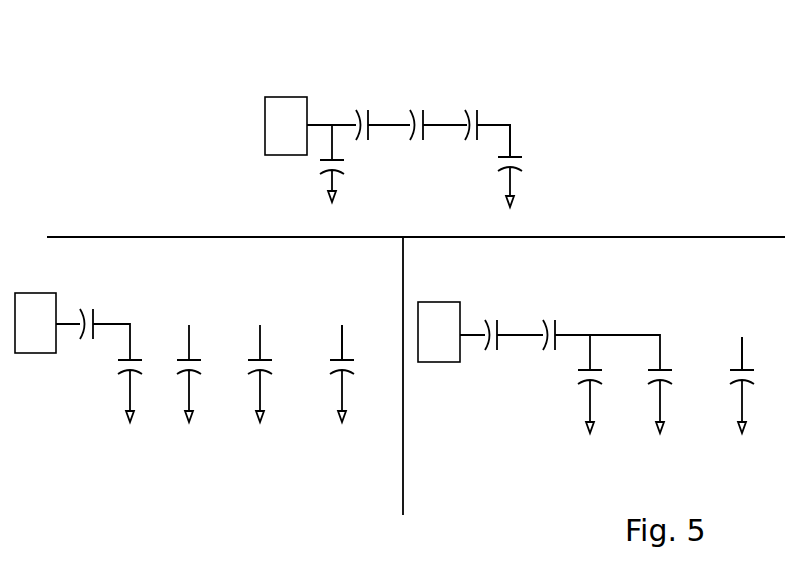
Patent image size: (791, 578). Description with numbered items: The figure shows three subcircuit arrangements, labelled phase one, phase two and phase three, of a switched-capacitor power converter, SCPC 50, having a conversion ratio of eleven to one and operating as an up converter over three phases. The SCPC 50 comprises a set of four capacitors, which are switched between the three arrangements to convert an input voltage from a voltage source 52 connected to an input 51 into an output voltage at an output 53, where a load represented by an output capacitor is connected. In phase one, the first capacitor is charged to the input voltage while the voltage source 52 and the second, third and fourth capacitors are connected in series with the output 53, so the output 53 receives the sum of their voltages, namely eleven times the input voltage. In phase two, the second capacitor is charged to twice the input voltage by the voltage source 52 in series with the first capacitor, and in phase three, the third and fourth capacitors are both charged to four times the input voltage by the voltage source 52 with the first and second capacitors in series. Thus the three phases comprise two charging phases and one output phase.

The SCPC 50 is at (152, 67).
The input 51 is at (318, 122).
The voltage source 52 is at (272, 143).
The output 53 is at (512, 188).